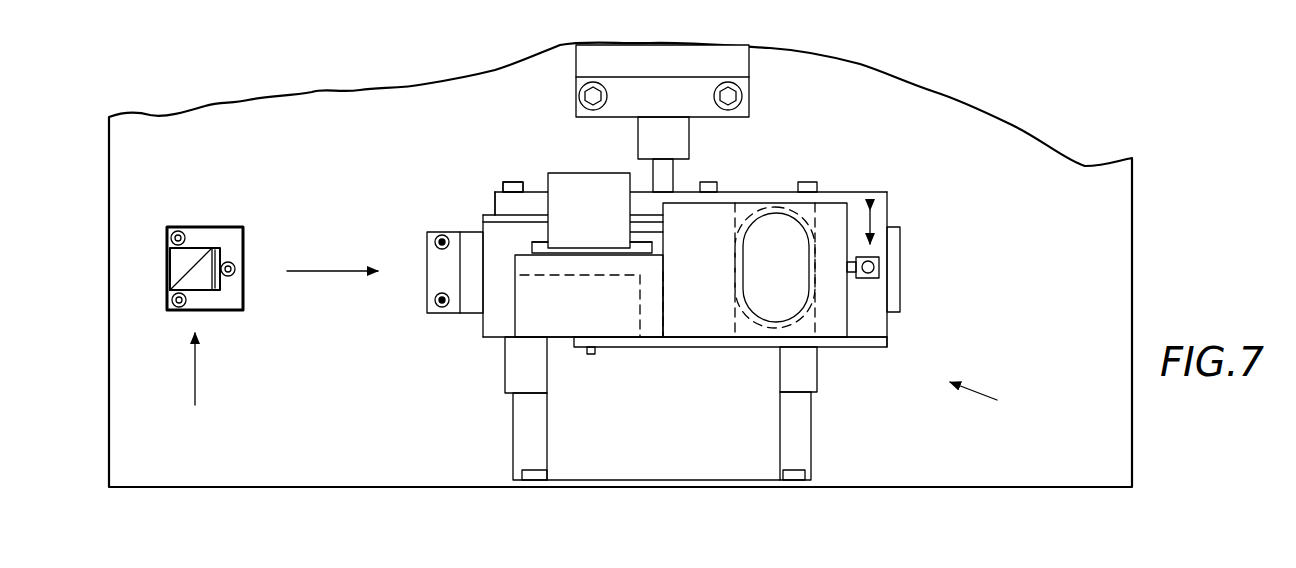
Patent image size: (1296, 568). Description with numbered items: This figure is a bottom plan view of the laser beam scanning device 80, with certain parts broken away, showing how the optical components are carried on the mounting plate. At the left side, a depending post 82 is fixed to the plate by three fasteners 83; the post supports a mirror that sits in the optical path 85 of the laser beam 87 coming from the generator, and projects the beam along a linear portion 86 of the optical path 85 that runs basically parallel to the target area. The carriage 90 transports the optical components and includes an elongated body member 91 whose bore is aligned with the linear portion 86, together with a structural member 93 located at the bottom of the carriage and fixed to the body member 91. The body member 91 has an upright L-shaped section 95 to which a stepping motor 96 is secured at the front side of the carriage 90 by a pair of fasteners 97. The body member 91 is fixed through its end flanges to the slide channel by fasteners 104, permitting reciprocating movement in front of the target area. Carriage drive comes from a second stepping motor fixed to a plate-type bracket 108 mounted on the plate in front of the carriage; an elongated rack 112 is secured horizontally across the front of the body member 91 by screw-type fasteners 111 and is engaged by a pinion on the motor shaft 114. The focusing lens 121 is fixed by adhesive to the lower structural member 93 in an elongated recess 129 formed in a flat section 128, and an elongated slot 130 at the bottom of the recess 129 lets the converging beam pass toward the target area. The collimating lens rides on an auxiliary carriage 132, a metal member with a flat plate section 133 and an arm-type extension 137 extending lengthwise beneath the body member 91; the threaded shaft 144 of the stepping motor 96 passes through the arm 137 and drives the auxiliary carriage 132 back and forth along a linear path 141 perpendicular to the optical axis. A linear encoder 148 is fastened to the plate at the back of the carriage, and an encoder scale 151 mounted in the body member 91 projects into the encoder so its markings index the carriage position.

The scanning device 80 is at (989, 402).
The depending post 82 is at (224, 312).
The fasteners 83 is at (184, 232).
The optical path 85 is at (197, 396).
The linear portion of the optical path 86 is at (318, 270).
The laser beam 87 is at (197, 366).
The carriage 90 is at (483, 337).
The body member 91 is at (427, 313).
The structural member 93 is at (850, 350).
The L-shaped section 95 is at (618, 304).
The stepping motor 96 is at (566, 176).
The fasteners 97 is at (626, 241).
The fasteners 104 is at (447, 237).
The plate-type bracket 108 is at (578, 113).
The screw-type fasteners 111 is at (509, 183).
The rack 112 is at (495, 200).
The shaft 114 is at (674, 178).
The focusing lens 121 is at (738, 312).
The flat section 128 is at (858, 334).
The recess 129 is at (735, 220).
The slot 130 is at (744, 255).
The auxiliary carriage 132 is at (888, 343).
The flat plate section 133 is at (890, 200).
The arm-type extension 137 is at (655, 348).
The linear path 141 is at (884, 223).
The shaft 144 is at (587, 356).
The linear encoder 148 is at (811, 426).
The encoder scale 151 is at (504, 372).